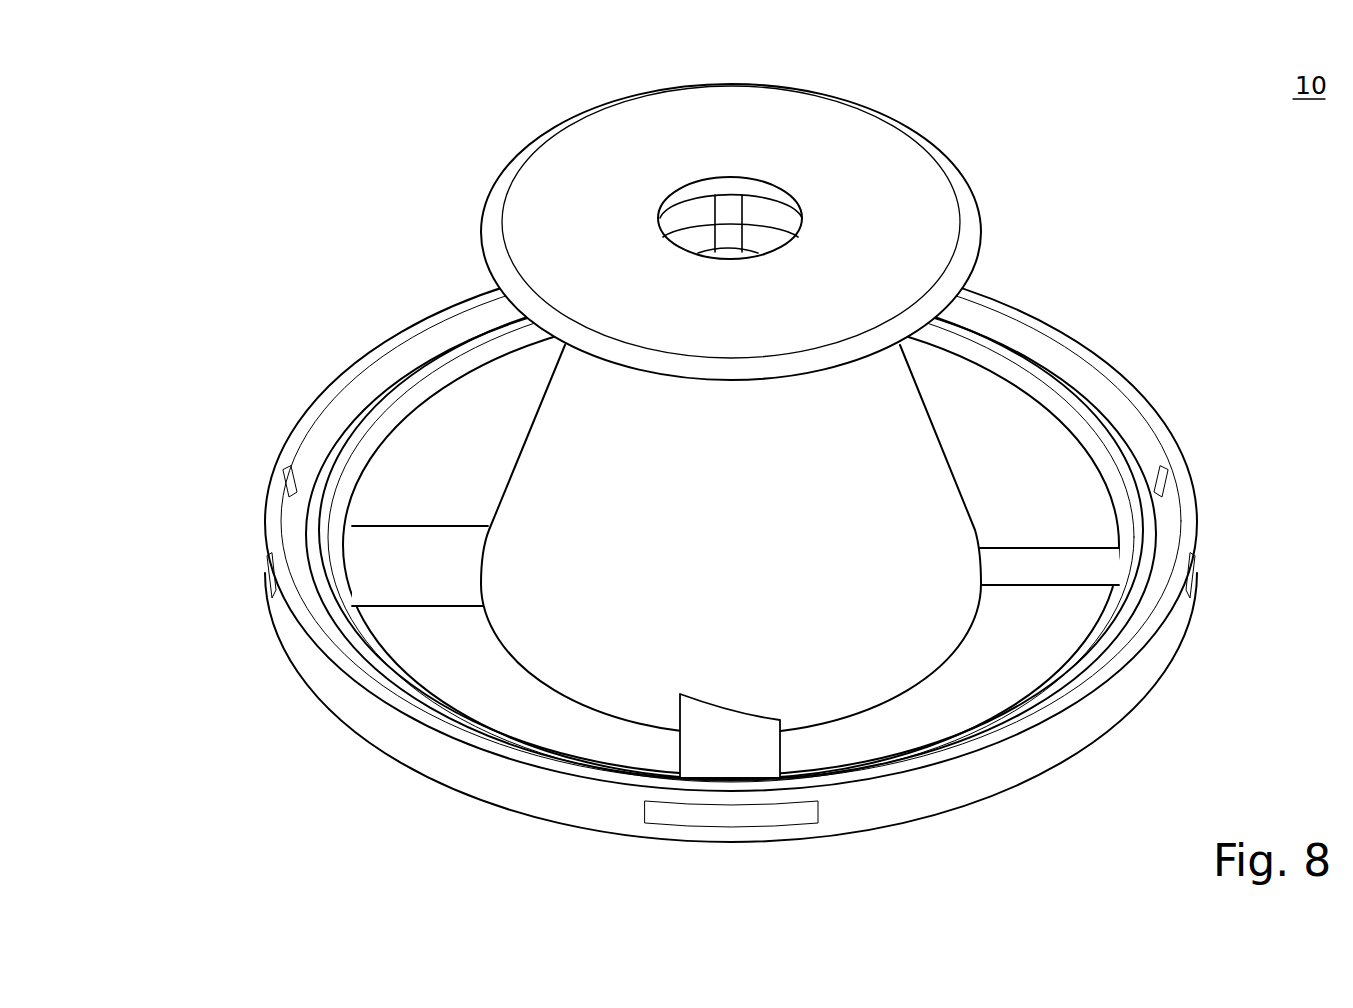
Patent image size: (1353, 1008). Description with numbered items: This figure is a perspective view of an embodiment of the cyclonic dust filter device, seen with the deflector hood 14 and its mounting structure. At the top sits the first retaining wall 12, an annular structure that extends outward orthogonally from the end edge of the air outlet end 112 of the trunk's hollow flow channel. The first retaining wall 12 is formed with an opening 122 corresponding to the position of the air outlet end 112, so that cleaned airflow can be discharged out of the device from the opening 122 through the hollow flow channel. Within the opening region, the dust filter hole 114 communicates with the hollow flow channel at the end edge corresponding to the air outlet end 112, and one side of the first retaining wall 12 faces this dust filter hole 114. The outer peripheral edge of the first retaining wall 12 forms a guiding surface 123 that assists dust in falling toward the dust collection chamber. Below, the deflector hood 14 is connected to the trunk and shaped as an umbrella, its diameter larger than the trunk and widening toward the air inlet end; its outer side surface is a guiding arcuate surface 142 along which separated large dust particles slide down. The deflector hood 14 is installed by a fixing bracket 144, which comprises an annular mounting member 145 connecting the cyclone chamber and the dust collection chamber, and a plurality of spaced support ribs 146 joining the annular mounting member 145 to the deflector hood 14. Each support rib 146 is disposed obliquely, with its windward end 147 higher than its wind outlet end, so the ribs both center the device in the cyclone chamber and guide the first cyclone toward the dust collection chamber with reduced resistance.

The first retaining wall 12 is at (788, 209).
The air outlet end 112 is at (778, 181).
The dust filter hole 114 is at (687, 220).
The opening 122 is at (694, 149).
The guiding surface 123 is at (967, 240).
The deflector hood 14 is at (663, 547).
The guiding arcuate surface 142 is at (935, 640).
The fixing bracket 144 is at (663, 547).
The annular mounting member 145 is at (326, 398).
The support ribs 146 is at (351, 545).
The windward end 147 is at (378, 578).